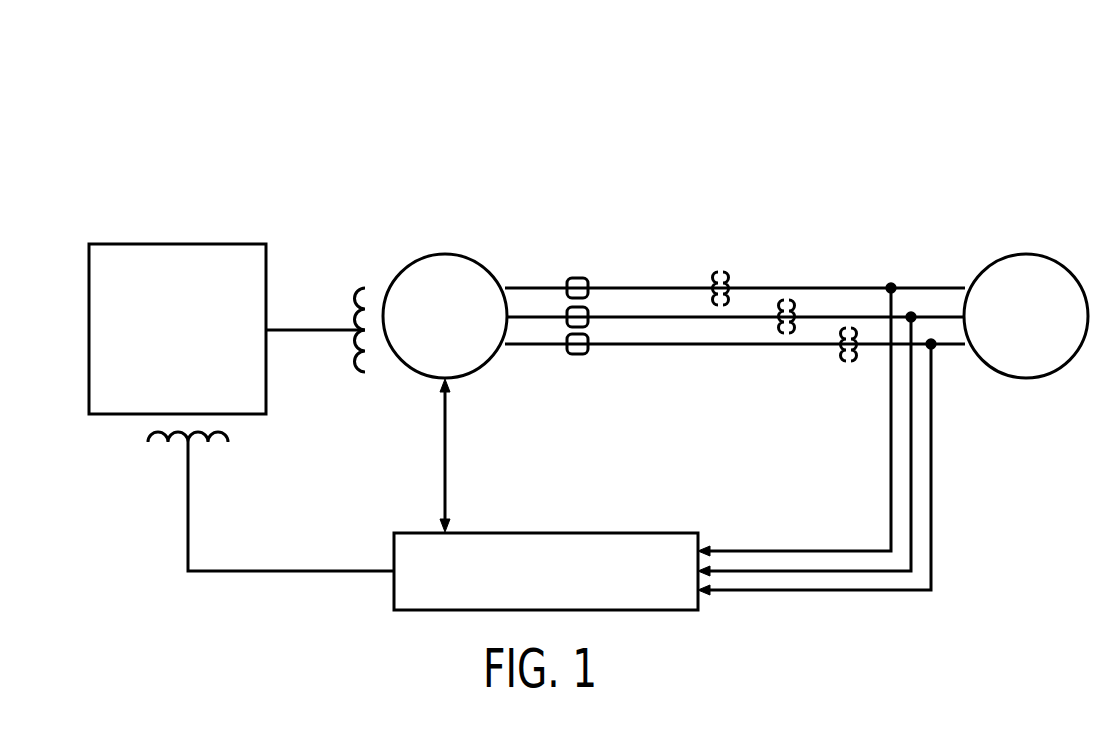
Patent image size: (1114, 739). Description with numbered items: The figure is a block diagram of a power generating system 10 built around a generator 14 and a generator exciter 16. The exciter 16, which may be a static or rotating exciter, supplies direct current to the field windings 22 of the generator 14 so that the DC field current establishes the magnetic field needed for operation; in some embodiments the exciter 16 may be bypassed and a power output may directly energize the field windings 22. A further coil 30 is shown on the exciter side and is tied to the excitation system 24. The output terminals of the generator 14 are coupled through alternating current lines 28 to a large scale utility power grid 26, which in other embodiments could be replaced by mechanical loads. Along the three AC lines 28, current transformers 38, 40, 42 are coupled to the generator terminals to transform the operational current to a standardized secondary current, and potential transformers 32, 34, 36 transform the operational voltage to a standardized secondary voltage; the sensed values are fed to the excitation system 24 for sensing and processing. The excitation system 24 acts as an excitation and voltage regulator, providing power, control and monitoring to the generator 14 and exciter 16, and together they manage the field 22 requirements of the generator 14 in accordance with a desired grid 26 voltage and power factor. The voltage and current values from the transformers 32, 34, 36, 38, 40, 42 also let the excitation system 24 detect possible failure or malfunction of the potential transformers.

The power generating system 10 is at (878, 104).
The generator 14 is at (443, 255).
The generator exciter 16 is at (266, 380).
The field windings 22 is at (368, 290).
The excitation system 24 is at (545, 533).
The power grid 26 is at (1025, 379).
The alternating current lines 28 is at (959, 257).
The exciter field coil 30 is at (148, 438).
The potential transformer 32 is at (722, 272).
The potential transformer 34 is at (794, 300).
The potential transformer 36 is at (844, 361).
The current transformer 38 is at (582, 275).
The current transformer 40 is at (590, 319).
The current transformer 42 is at (576, 357).